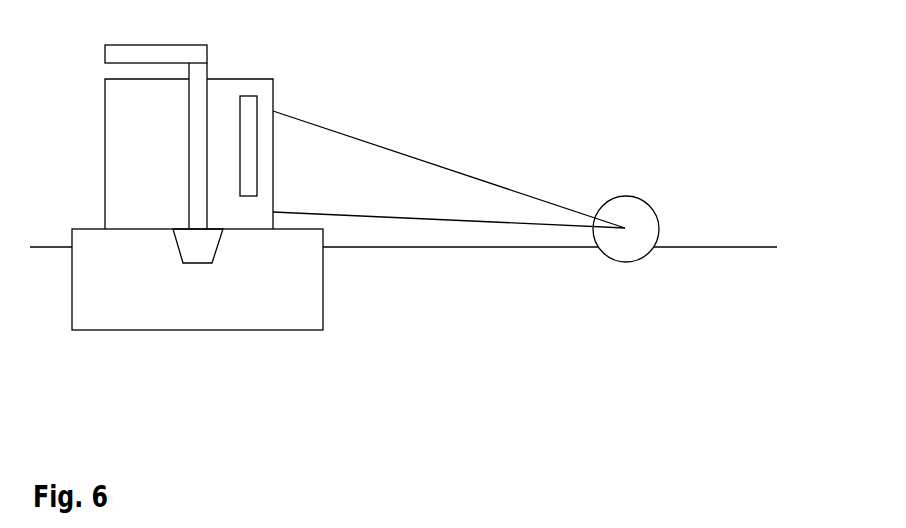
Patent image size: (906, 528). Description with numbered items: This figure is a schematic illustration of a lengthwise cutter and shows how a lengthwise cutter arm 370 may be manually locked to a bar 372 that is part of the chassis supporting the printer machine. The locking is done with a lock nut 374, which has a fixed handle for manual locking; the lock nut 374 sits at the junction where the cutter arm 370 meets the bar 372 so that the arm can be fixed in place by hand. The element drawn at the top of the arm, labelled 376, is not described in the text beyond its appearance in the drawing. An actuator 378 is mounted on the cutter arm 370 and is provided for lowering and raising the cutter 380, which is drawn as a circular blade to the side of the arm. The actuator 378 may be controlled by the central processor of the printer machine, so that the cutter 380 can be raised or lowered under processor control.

The lengthwise cutter arm 370 is at (495, 162).
The bar 372 is at (324, 277).
The lock nut 374 is at (202, 237).
The arm 376 is at (157, 50).
The actuator 378 is at (260, 100).
The cutter 380 is at (625, 201).